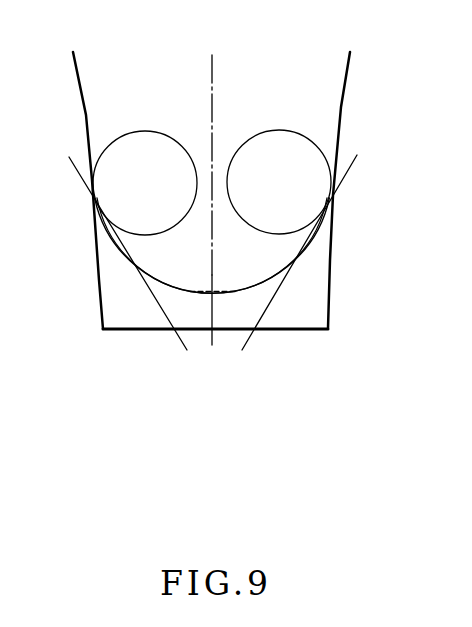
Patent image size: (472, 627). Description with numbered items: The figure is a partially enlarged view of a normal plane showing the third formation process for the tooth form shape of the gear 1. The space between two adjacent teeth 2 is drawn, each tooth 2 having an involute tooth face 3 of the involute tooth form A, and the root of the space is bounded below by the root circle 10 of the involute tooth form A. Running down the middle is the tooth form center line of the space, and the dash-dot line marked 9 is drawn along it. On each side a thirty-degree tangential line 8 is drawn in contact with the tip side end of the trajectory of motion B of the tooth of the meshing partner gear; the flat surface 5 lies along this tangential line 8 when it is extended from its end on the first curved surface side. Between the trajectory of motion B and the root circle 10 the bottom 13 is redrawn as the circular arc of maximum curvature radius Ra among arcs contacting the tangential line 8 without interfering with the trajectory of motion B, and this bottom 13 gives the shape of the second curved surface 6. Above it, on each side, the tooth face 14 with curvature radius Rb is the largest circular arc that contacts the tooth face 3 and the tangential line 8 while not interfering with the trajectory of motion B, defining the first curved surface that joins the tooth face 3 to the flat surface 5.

The gear 1 is at (180, 66).
The tooth 2 is at (84, 70).
The tooth face 3 is at (87, 117).
The flat surface 5 is at (184, 262).
The second curved surface 6 is at (243, 360).
The tangential line 8 is at (78, 175).
The center axis 9 is at (213, 103).
The root circle 10 is at (215, 393).
The bottom R13 13 is at (243, 360).
The tooth face R14 14 is at (217, 212).
The involute tooth form A is at (144, 339).
The trajectory of motion B is at (226, 302).
The curvature radius Ra is at (213, 187).
The curvature radius Rb is at (145, 183).